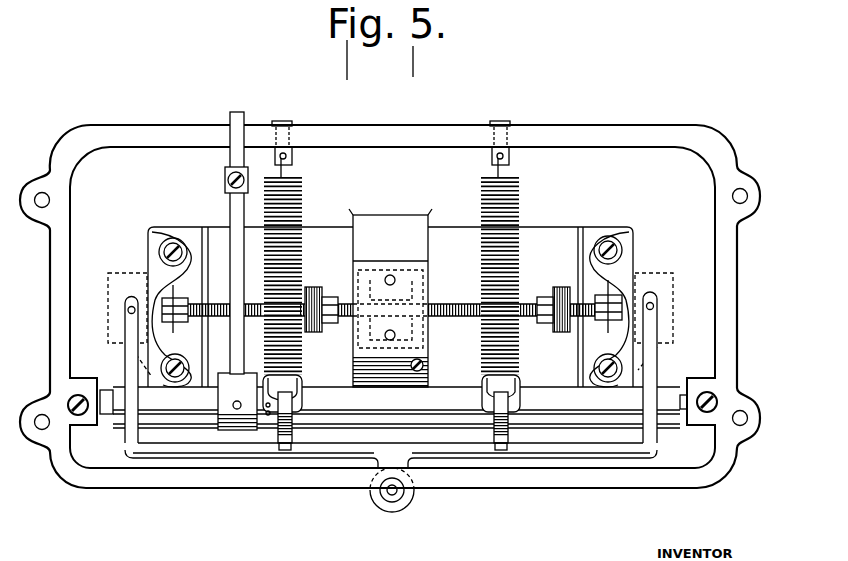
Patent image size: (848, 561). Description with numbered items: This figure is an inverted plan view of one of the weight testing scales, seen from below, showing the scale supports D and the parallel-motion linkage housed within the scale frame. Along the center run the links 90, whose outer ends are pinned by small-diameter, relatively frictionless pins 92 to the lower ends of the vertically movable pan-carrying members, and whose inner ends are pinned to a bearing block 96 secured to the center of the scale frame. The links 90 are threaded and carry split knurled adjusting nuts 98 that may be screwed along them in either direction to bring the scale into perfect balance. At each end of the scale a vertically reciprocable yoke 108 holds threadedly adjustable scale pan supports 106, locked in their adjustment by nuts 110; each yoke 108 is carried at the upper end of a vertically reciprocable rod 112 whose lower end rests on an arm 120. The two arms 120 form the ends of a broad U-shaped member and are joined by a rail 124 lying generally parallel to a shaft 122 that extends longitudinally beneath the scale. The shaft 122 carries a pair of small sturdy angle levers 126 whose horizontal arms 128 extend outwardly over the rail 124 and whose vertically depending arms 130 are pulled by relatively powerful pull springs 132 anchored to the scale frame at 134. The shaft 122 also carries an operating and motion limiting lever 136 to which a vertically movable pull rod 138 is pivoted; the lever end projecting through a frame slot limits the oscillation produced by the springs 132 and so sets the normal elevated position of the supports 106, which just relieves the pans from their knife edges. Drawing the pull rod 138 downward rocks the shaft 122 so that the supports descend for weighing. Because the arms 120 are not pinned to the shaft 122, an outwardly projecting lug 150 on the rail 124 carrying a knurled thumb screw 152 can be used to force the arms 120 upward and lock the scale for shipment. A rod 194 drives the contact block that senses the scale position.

The links 90 is at (217, 303).
The pins 92 is at (176, 298).
The bearing block 96 is at (383, 270).
The split knurled adjusting nuts 98 is at (313, 289).
The scale pan supports 106 is at (180, 245).
The yoke 108 is at (152, 272).
The nuts 110 is at (173, 243).
The rod 112 is at (124, 312).
The arm 120 is at (127, 333).
The shaft 122 is at (335, 445).
The rail 124 is at (450, 445).
The angle levers 126 is at (270, 436).
The horizontal arms 128 is at (280, 450).
The vertically depending arms 130 is at (300, 397).
The pull springs 132 is at (302, 212).
The scale frame connection 134 is at (292, 124).
The operating and motion limiting lever 136 is at (233, 210).
The pull rod 138 is at (233, 175).
The lug 150 is at (387, 462).
The knurled thumb screw 152 is at (403, 508).
The rod 194 is at (416, 370).
The scale supports D is at (165, 237).